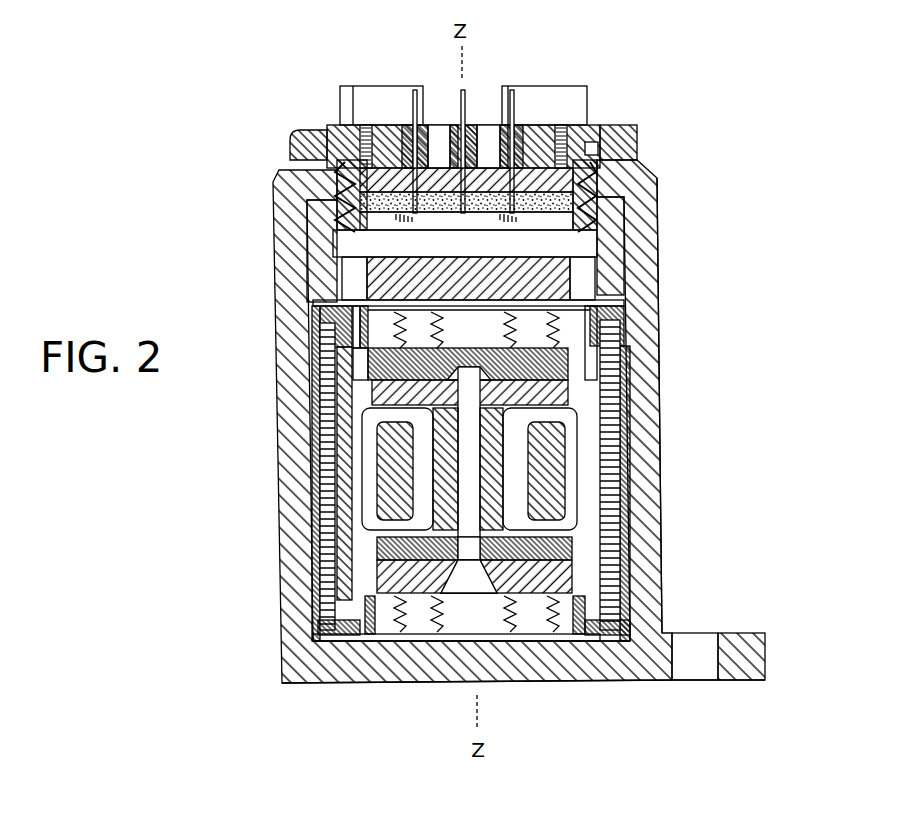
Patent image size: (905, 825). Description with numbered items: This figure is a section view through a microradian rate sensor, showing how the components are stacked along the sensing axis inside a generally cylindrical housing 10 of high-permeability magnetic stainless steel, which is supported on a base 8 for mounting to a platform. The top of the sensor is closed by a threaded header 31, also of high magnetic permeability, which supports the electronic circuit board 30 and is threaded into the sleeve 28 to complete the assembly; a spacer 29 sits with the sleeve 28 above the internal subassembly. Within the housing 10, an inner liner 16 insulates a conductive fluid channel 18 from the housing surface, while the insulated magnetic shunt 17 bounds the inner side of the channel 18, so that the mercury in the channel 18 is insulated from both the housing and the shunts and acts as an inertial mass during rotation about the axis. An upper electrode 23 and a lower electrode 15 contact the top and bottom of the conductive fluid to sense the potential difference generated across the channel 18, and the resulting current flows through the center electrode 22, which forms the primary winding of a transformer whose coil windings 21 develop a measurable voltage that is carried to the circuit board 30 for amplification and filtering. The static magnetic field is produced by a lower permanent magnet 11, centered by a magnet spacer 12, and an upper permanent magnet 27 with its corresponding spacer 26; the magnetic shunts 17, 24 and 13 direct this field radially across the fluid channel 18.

The base 8 is at (766, 657).
The cylindrical housing 10 is at (663, 500).
The permanent magnet 11 is at (543, 685).
The magnet spacer 12 is at (598, 687).
The magnetic shunt 13 is at (392, 580).
The lower electrode 15 is at (633, 622).
The inner liner 16 is at (635, 520).
The magnetic shunt 17 is at (590, 360).
The conductive fluid channel 18 is at (660, 452).
The coil windings 21 is at (382, 493).
The center electrode 22 is at (503, 418).
The upper electrode 23 is at (328, 293).
The magnetic shunt 24 is at (327, 392).
The spacer 26 is at (627, 303).
The permanent magnet 27 is at (563, 270).
The sleeve 28 is at (655, 168).
The spacer 29 is at (640, 122).
The electronic circuit board 30 is at (605, 187).
The threaded header 31 is at (300, 145).